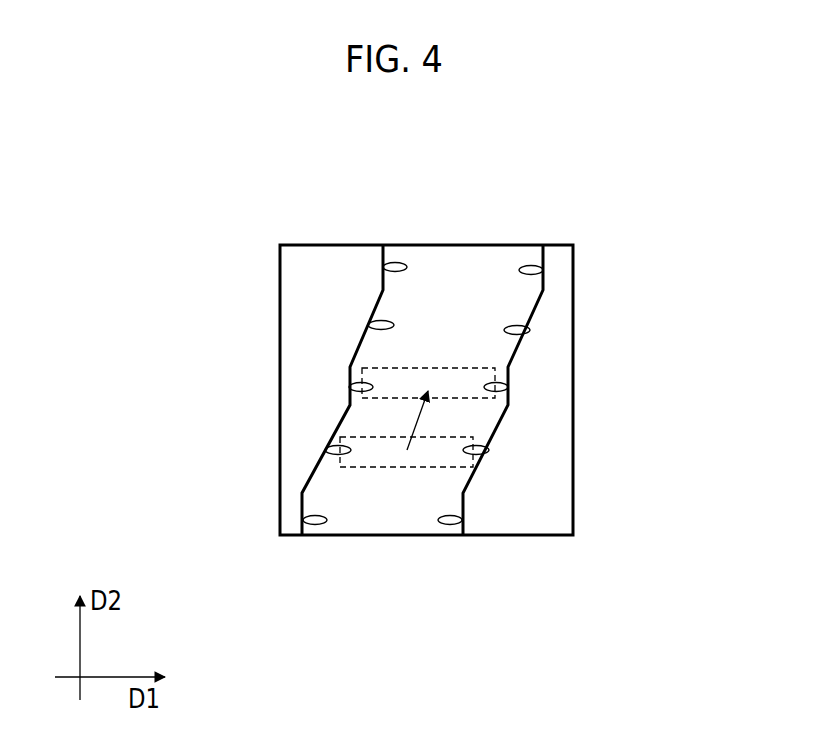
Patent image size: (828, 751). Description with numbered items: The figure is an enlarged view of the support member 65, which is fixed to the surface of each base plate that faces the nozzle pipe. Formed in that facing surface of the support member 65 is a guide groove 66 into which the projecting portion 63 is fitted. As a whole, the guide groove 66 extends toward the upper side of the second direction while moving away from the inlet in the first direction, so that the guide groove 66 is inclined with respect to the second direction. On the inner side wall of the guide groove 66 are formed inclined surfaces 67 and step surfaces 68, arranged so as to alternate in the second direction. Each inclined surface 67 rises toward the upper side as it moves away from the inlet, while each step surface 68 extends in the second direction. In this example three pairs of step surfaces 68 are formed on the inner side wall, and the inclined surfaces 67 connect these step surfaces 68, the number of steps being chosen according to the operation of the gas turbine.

The projecting portion 63 is at (378, 460).
The support member 65 is at (112, 175).
The guide groove 66 is at (497, 268).
The inclined surface 67 is at (368, 325).
The step surface 68 is at (383, 267).